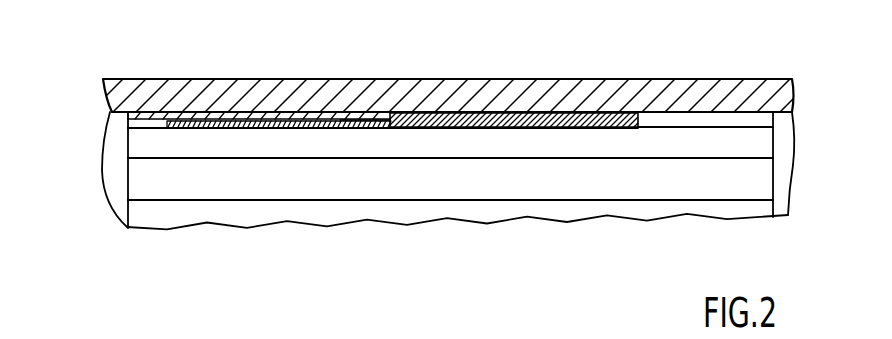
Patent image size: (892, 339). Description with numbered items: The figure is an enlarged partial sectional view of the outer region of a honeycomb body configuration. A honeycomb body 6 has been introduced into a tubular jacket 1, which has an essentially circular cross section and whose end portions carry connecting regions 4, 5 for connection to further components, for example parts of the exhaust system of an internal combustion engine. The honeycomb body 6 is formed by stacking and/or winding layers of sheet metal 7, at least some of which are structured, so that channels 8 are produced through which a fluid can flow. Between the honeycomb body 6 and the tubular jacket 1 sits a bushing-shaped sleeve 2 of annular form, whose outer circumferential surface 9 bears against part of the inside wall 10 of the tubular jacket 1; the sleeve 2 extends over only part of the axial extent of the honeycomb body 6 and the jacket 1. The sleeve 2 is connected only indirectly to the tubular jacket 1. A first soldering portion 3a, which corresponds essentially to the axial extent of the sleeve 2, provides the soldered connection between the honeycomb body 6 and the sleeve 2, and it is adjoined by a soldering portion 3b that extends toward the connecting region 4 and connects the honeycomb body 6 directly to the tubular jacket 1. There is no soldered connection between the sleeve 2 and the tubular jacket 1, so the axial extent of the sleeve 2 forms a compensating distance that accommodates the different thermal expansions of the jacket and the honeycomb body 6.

The tubular jacket 1 is at (752, 90).
The sleeve 2 is at (152, 118).
The first portion of soldering portion 3a is at (210, 130).
The soldering portion 3b is at (554, 120).
The connecting region 4 is at (783, 185).
The connecting region 5 is at (108, 183).
The honeycomb body 6 is at (718, 143).
The layers of sheet metal 7 is at (478, 158).
The channels 8 is at (583, 143).
The outer circumferential surface 9 is at (360, 122).
The inside wall 10 is at (312, 118).